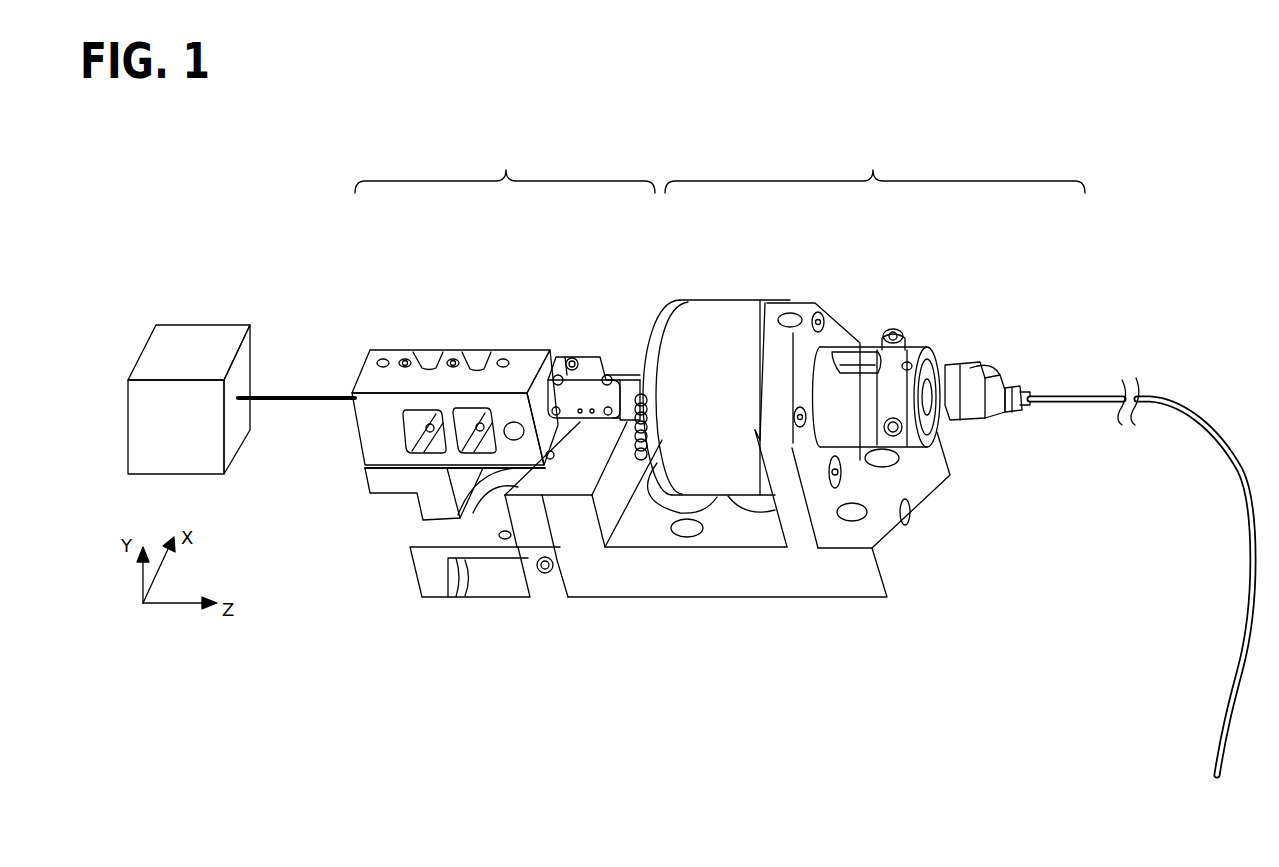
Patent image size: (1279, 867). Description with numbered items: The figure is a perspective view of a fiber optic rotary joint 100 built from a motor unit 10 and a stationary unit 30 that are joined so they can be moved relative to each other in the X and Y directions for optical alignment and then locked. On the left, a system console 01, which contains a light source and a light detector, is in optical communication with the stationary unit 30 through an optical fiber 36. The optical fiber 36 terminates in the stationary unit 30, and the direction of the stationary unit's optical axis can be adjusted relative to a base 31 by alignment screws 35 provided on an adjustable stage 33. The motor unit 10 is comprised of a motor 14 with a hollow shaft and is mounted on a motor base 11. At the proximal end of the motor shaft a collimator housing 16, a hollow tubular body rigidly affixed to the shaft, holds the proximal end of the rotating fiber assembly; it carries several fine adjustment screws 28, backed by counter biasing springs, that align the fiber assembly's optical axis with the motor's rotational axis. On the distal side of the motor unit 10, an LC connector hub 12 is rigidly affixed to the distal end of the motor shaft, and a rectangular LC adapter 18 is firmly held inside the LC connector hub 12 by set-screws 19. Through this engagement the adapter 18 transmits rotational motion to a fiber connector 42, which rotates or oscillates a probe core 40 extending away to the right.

The fiber optic rotary joint 100 is at (636, 129).
The motor unit 10 is at (875, 164).
The stationary unit 30 is at (505, 164).
The system console 01 is at (200, 355).
The optical fiber 36 is at (291, 395).
The adjustable stage 33 is at (393, 378).
The alignment screws 35 is at (430, 367).
The fine adjustment screws 28 is at (602, 370).
The collimator housing 16 is at (618, 372).
The motor 14 is at (711, 330).
The set-screws 19 is at (890, 330).
The LC connector hub 12 is at (914, 353).
The LC adapter 18 is at (947, 365).
The fiber connector 42 is at (987, 375).
The motor base 11 is at (922, 492).
The base 31 is at (422, 570).
The probe core 40 is at (1191, 432).